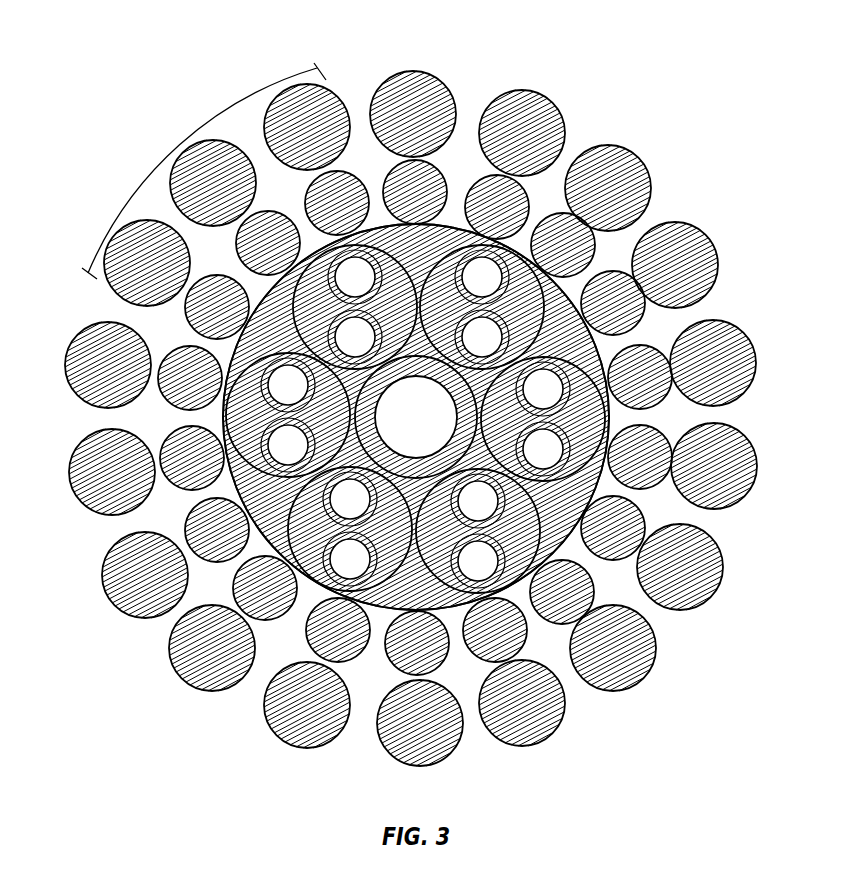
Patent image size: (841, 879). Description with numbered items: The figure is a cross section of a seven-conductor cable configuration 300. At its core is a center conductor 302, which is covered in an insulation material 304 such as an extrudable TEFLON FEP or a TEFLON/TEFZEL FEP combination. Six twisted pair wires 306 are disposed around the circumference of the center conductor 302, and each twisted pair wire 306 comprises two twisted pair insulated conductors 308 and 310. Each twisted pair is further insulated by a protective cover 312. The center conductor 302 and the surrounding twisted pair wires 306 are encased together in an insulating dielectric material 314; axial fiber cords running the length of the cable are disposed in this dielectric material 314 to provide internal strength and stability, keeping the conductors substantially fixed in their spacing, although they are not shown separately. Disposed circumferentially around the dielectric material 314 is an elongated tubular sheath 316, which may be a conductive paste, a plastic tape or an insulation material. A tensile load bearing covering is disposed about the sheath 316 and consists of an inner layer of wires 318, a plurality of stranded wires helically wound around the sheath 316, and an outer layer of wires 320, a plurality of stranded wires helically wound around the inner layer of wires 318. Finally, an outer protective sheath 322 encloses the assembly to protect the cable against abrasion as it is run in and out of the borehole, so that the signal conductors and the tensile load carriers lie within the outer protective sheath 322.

The 7-conductor cable configuration 300 is at (541, 68).
The center conductor 302 is at (437, 432).
The insulation material 304 is at (505, 478).
The twisted pair wires 306 is at (473, 505).
The twisted pair insulated conductor 308 is at (273, 440).
The twisted pair insulated conductor 310 is at (290, 373).
The protective cover 312 is at (607, 422).
The insulating dielectric material 314 is at (273, 510).
The elongated tubular sheath 316 is at (312, 577).
The inner layer of wires 318 is at (637, 232).
The outer layer of wires 320 is at (623, 143).
The outer protective sheath 322 is at (137, 196).